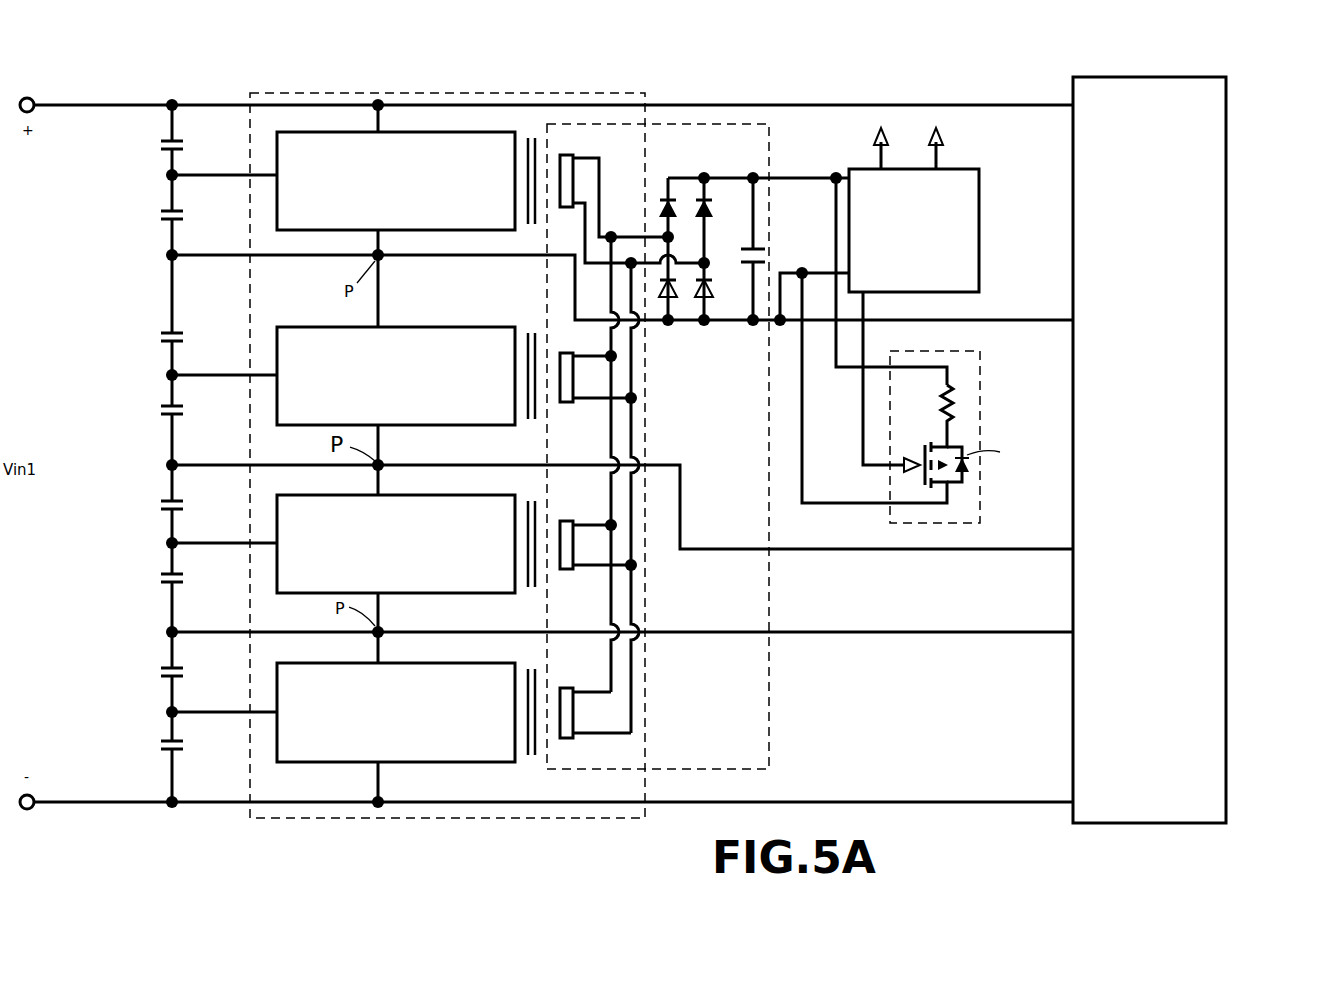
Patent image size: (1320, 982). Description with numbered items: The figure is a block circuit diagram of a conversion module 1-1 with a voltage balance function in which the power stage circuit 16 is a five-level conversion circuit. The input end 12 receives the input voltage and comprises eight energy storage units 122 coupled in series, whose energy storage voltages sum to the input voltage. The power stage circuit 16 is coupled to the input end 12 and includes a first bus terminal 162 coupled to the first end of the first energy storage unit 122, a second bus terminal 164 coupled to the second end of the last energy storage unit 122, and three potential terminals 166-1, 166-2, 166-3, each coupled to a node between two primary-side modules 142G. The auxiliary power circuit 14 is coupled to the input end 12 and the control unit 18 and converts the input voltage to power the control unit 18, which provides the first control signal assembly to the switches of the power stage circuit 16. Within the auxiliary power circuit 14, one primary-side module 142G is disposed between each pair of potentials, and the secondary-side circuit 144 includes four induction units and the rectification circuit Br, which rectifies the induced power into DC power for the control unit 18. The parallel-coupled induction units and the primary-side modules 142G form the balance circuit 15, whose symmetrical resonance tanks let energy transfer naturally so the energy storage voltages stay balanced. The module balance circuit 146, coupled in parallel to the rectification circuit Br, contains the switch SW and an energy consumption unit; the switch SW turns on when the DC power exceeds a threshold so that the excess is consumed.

The conversion module 1-1 is at (1302, 105).
The input end 12 is at (182, 98).
The energy storage unit 122 is at (140, 446).
The auxiliary power circuit 14 is at (675, 94).
The primary-side module 142G is at (430, 193).
The secondary-side circuit 144 is at (717, 414).
The module balance circuit 146 is at (935, 350).
The balance circuit 15 is at (513, 823).
The power stage circuit 16 is at (1208, 276).
The first bus terminal 162 is at (943, 103).
The second bus terminal 164 is at (965, 800).
The potential terminal 166-1 is at (1022, 318).
The potential terminal 166-2 is at (807, 553).
The potential terminal 166-3 is at (890, 636).
The control unit 18 is at (965, 182).
The rectification circuit Br is at (706, 161).
The switch SW is at (1003, 450).